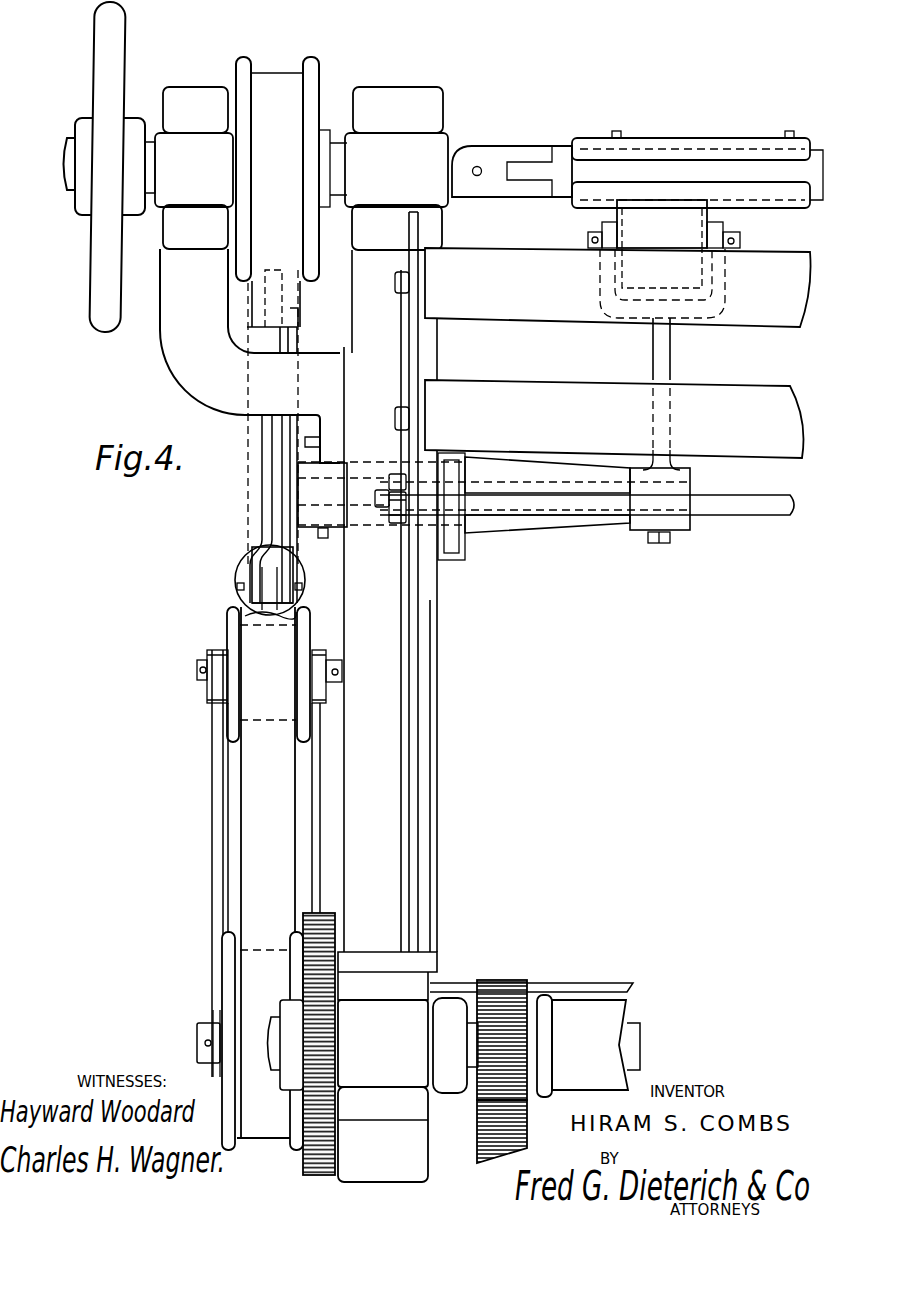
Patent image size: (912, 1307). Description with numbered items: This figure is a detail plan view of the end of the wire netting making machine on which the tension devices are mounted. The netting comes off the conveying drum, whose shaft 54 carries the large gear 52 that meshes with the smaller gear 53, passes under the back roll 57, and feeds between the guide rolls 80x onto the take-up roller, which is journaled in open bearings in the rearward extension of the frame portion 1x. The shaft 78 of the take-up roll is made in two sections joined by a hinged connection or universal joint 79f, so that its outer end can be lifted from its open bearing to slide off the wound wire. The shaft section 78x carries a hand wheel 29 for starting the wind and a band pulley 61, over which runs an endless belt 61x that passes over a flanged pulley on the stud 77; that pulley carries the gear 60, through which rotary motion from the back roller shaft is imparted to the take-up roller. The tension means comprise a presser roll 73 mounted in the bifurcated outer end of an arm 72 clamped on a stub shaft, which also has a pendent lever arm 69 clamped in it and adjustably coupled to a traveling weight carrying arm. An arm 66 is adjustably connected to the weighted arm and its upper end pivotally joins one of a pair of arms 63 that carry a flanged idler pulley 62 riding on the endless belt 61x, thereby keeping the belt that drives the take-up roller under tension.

The frame portion 1x is at (440, 617).
The hand wheel 29 is at (109, 167).
The gear 52 is at (487, 1146).
The gear 53 is at (521, 973).
The shaft 54 is at (641, 1038).
The back roll 57 is at (582, 1046).
The gear 60 is at (278, 1062).
The band pulley 61 is at (296, 169).
The endless belt 61x is at (270, 605).
The flanged idler pulley 62 is at (235, 680).
The arms 63 is at (216, 893).
The arm 66 is at (198, 674).
The pendent lever arm 69 is at (298, 451).
The arm 72 is at (672, 363).
The presser roll 73 is at (664, 226).
The stud 77 is at (196, 1043).
The shaft 78 is at (333, 150).
The shaft section 78x is at (71, 176).
The hinged connection or universal joint 79f is at (522, 166).
The guide rolls 80x is at (618, 353).